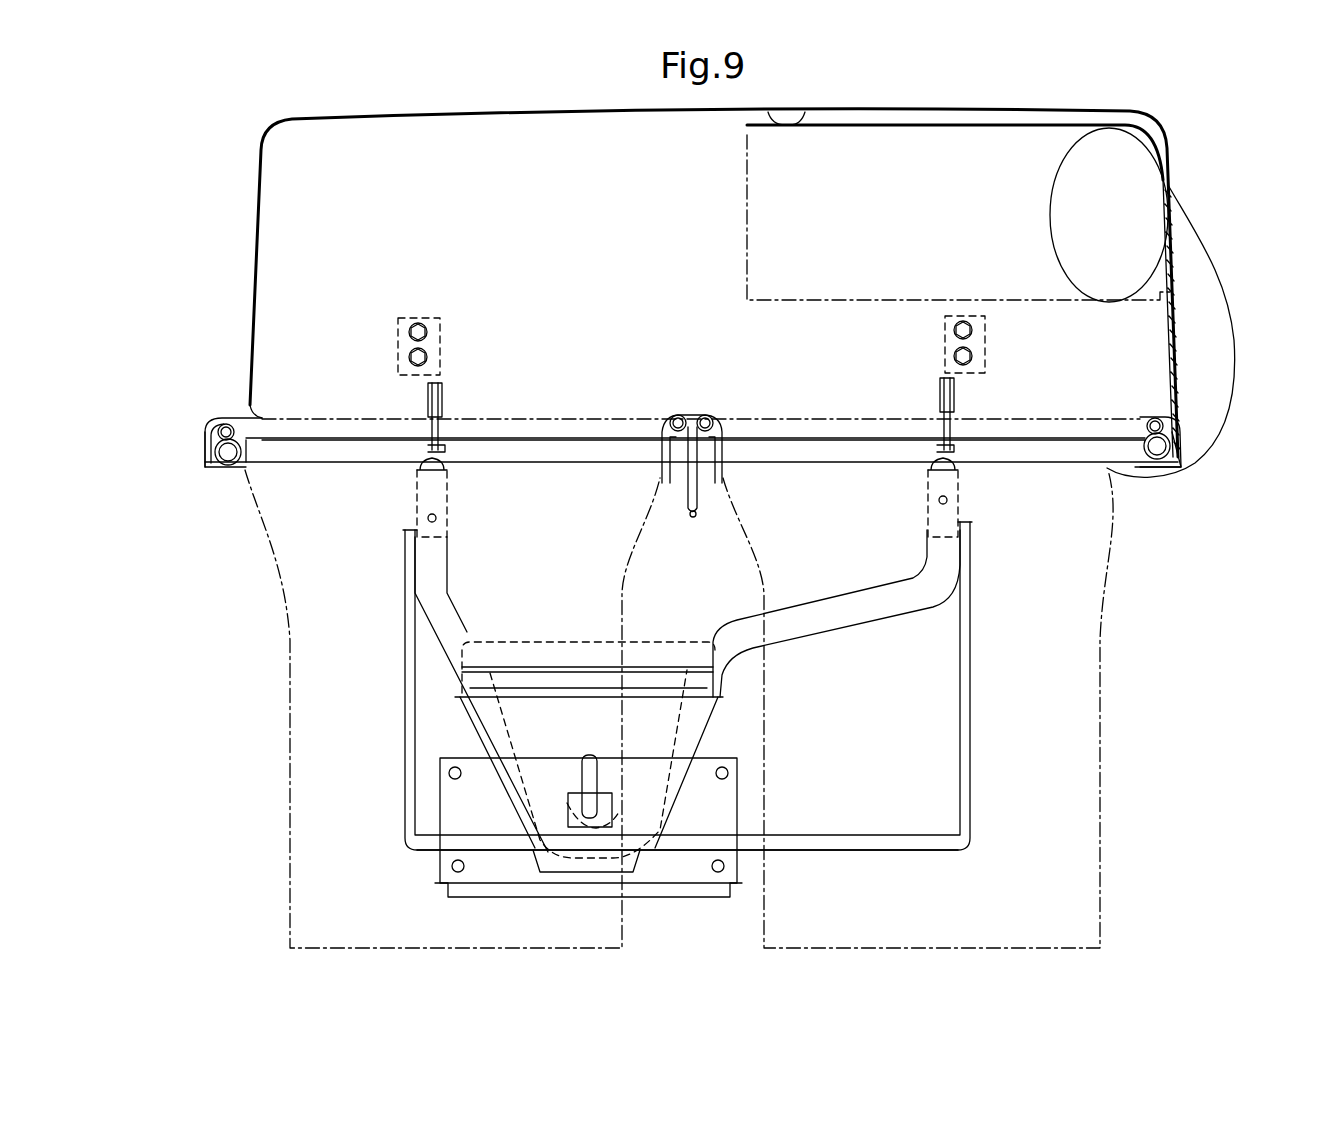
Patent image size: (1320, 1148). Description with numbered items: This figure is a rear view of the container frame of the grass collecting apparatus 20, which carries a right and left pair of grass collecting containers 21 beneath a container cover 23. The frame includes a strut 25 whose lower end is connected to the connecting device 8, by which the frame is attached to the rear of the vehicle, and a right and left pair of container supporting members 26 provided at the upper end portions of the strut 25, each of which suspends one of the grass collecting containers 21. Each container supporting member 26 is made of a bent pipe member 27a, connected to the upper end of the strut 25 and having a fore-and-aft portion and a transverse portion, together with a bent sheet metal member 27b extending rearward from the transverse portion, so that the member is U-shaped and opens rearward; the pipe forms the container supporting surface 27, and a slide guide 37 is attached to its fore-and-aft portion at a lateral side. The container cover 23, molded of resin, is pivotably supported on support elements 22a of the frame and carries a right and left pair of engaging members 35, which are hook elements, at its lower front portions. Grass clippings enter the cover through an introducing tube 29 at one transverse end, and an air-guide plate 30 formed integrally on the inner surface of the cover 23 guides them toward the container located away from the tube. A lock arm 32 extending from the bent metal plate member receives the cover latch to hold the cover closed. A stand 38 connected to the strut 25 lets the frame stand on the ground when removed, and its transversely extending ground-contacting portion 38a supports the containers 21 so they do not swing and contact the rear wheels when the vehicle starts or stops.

The connecting device 8 is at (556, 638).
The grass collecting apparatus 20 is at (213, 266).
The grass collecting containers 21 is at (290, 776).
The support elements 22a is at (447, 460).
The container cover 23 is at (258, 172).
The strut 25 is at (837, 618).
The container supporting members 26 is at (344, 470).
The container supporting surface 27 is at (226, 423).
The bent pipe member 27a is at (825, 460).
The bent sheet metal member 27b is at (662, 475).
The introducing tube 29 is at (1215, 312).
The air-guide plate 30 is at (905, 114).
The lock arm 32 is at (693, 520).
The engaging members 35 is at (437, 432).
The slide guide 37 is at (206, 440).
The stand 38 is at (975, 682).
The ground-contacting portion 38a is at (880, 852).